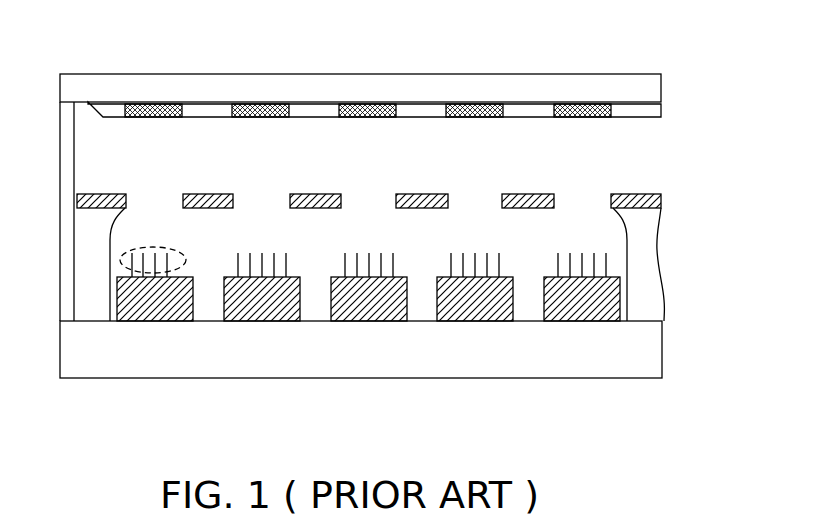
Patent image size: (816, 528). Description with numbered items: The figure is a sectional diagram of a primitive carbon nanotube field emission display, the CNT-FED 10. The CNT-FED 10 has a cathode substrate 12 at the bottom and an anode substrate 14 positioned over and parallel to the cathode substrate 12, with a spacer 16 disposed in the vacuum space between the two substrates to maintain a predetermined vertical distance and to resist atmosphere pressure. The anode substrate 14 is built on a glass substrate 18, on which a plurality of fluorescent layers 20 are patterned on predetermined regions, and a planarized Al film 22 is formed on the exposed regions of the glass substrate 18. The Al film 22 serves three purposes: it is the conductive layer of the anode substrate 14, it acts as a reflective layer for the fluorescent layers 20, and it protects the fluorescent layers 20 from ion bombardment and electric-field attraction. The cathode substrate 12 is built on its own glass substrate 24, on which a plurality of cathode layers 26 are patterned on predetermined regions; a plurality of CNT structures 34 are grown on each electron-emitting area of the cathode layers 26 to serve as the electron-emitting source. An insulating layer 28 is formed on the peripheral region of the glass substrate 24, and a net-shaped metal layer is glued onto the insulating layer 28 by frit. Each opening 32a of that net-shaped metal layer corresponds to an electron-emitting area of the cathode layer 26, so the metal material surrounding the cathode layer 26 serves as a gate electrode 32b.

The CNT-FED 10 is at (50, 23).
The cathode substrate 12 is at (387, 289).
The anode substrate 14 is at (387, 103).
The spacer 16 is at (60, 180).
The glass substrate 18 is at (650, 88).
The fluorescent layers 20 is at (269, 118).
The Al film 22 is at (650, 116).
The glass substrate 24 is at (650, 346).
The cathode layers 26 is at (162, 320).
The insulating layer 28 is at (650, 260).
The opening 32a is at (157, 210).
The gate electrode 32b is at (98, 193).
The CNT structures 34 is at (141, 245).